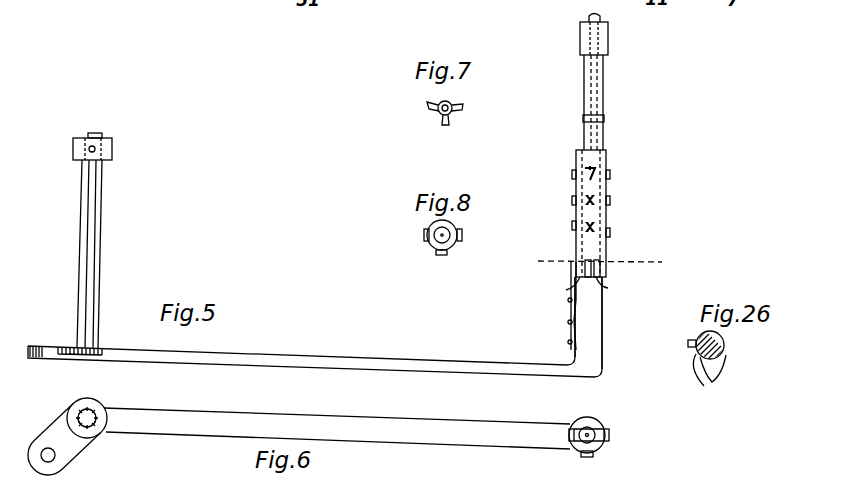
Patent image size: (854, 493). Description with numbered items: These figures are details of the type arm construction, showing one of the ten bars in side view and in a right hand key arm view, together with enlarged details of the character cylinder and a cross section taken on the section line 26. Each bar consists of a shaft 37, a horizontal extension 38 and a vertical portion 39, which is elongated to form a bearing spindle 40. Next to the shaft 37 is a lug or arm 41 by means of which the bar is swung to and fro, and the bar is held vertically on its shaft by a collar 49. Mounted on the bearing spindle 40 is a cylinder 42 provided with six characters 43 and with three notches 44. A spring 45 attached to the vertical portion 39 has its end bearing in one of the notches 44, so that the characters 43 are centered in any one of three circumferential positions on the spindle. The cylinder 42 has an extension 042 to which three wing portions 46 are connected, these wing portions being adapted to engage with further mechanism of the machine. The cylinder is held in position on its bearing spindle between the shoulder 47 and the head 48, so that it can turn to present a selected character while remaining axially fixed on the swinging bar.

In FIG. 5, the section line 26 is at (588, 263).
In FIG. 5, the shaft 37 is at (103, 238).
In FIG. 6, the shaft 37 is at (90, 415).
In FIG. 5, the horizontal extension 38 is at (320, 350).
In FIG. 6, the horizontal extension 38 is at (337, 428).
In FIG. 5, the vertical portion 39 is at (603, 320).
In FIG. 5, the bearing spindle 40 is at (607, 155).
In FIG. 26, the bearing spindle 40 is at (725, 344).
In FIG. 5, the lug or arm 41 is at (36, 345).
In FIG. 6, the lug or arm 41 is at (47, 438).
In FIG. 5, the cylinder 42 is at (585, 80).
In FIG. 8, the cylinder 42 is at (452, 250).
In FIG. 26, the cylinder 42 is at (696, 338).
In FIG. 5, the extension 042 is at (604, 117).
In FIG. 6, the extension 042 is at (592, 456).
In FIG. 5, the characters 43 is at (572, 173).
In FIG. 6, the characters 43 is at (569, 436).
In FIG. 8, the characters 43 is at (424, 234).
In FIG. 5, the notches 44 is at (606, 290).
In FIG. 26, the notches 44 is at (713, 378).
In FIG. 5, the spring 45 is at (570, 318).
In FIG. 26, the spring 45 is at (694, 353).
In FIG. 5, the wing portions 46 is at (580, 41).
In FIG. 6, the wing portions 46 is at (604, 428).
In FIG. 7, the wing portions 46 is at (440, 113).
In FIG. 5, the shoulder 47 is at (567, 291).
In FIG. 5, the head 48 is at (600, 18).
In FIG. 6, the head 48 is at (588, 428).
In FIG. 5, the collars 49 is at (112, 148).
In FIG. 6, the collars 49 is at (110, 418).